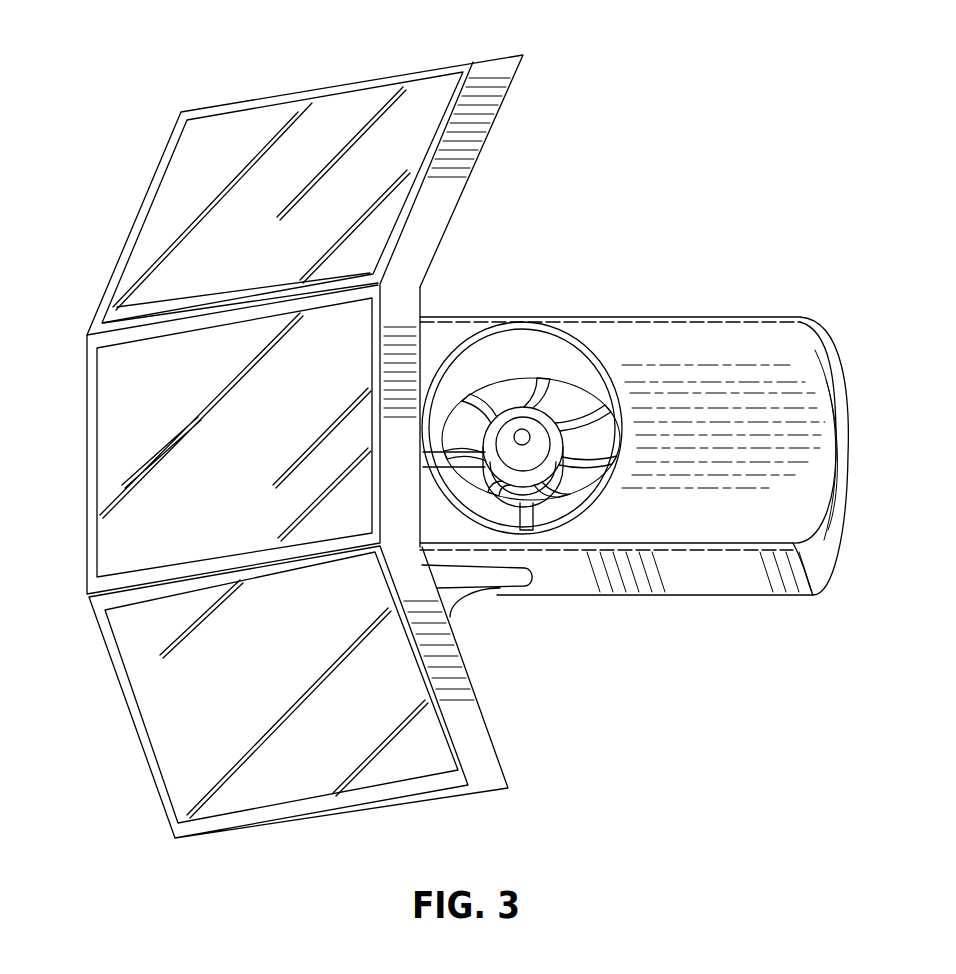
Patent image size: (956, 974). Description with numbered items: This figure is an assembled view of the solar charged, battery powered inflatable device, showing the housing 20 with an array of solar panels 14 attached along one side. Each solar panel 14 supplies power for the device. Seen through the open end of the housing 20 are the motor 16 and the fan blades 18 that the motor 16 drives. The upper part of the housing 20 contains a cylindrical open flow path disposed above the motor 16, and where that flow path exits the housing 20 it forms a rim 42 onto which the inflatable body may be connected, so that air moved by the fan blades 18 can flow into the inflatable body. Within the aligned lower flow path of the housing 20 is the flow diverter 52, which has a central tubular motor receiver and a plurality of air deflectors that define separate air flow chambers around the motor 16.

The solar panel 14 is at (192, 132).
The housing 20 is at (775, 313).
The rim 42 is at (587, 337).
The motor 16 is at (493, 405).
The fan blades 18 is at (537, 442).
The flow diverter 52 is at (422, 462).